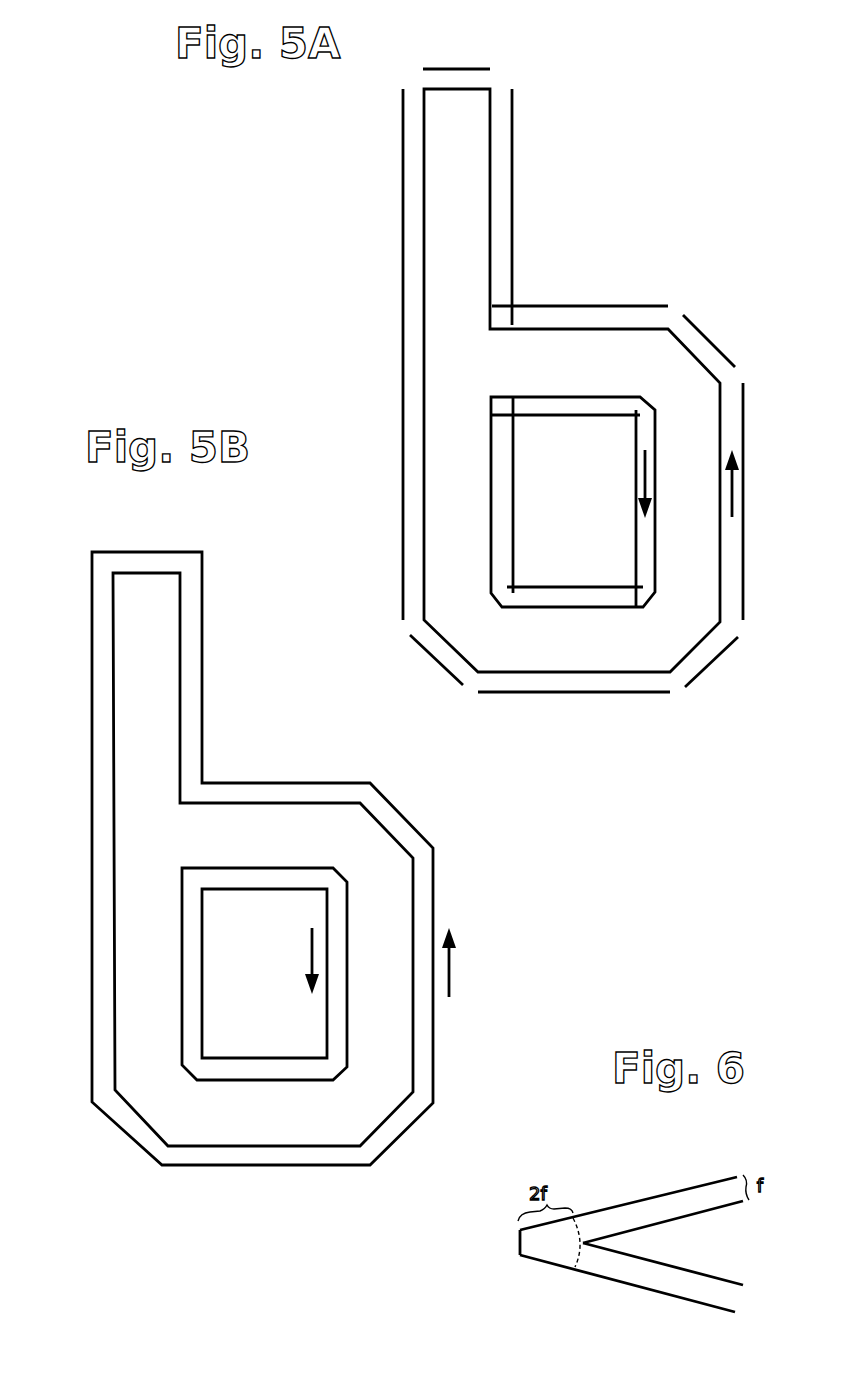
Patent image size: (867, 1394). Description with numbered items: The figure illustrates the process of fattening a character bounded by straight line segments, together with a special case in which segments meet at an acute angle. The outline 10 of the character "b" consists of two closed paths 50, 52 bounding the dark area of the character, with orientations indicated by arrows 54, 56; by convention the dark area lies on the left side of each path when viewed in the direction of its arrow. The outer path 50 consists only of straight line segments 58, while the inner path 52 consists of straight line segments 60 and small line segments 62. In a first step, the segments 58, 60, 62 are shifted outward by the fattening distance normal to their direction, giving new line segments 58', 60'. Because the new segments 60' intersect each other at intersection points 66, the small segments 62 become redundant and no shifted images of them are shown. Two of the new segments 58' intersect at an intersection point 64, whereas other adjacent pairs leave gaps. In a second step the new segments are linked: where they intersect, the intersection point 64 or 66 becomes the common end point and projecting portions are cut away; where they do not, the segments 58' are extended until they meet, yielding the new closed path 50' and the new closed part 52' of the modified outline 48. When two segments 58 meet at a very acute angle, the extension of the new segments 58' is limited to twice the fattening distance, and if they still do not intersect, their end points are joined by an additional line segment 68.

In FIG. 5A, the outline 10 is at (613, 326).
In FIG. 5B, the outline 10 is at (276, 801).
In FIG. 5B, the modified outline 48 is at (262, 858).
In FIG. 5A, the closed path 50 is at (572, 380).
In FIG. 5B, the new closed path 50' is at (263, 859).
In FIG. 5A, the closed path 52 is at (528, 573).
In FIG. 5B, the new closed part 52' is at (234, 1000).
In FIG. 5A, the arrow 54 is at (738, 493).
In FIG. 5A, the arrow 56 is at (640, 478).
In FIG. 5A, the straight line segments 58 is at (571, 380).
In FIG. 6, the straight line segments 58 is at (678, 1243).
In FIG. 5A, the new line segments 58' is at (571, 346).
In FIG. 5B, the new line segments 58' is at (70, 1040).
In FIG. 6, the new line segments 58' is at (628, 1244).
In FIG. 5A, the straight line segments 60 is at (655, 568).
In FIG. 5A, the new line segments 60' is at (567, 502).
In FIG. 5B, the new line segments 60' is at (264, 974).
In FIG. 5A, the small line segments 62 is at (652, 418).
In FIG. 5A, the intersection point 64 is at (512, 298).
In FIG. 5A, the intersection points 66 is at (515, 418).
In FIG. 6, the additional line segment 68 is at (518, 1240).